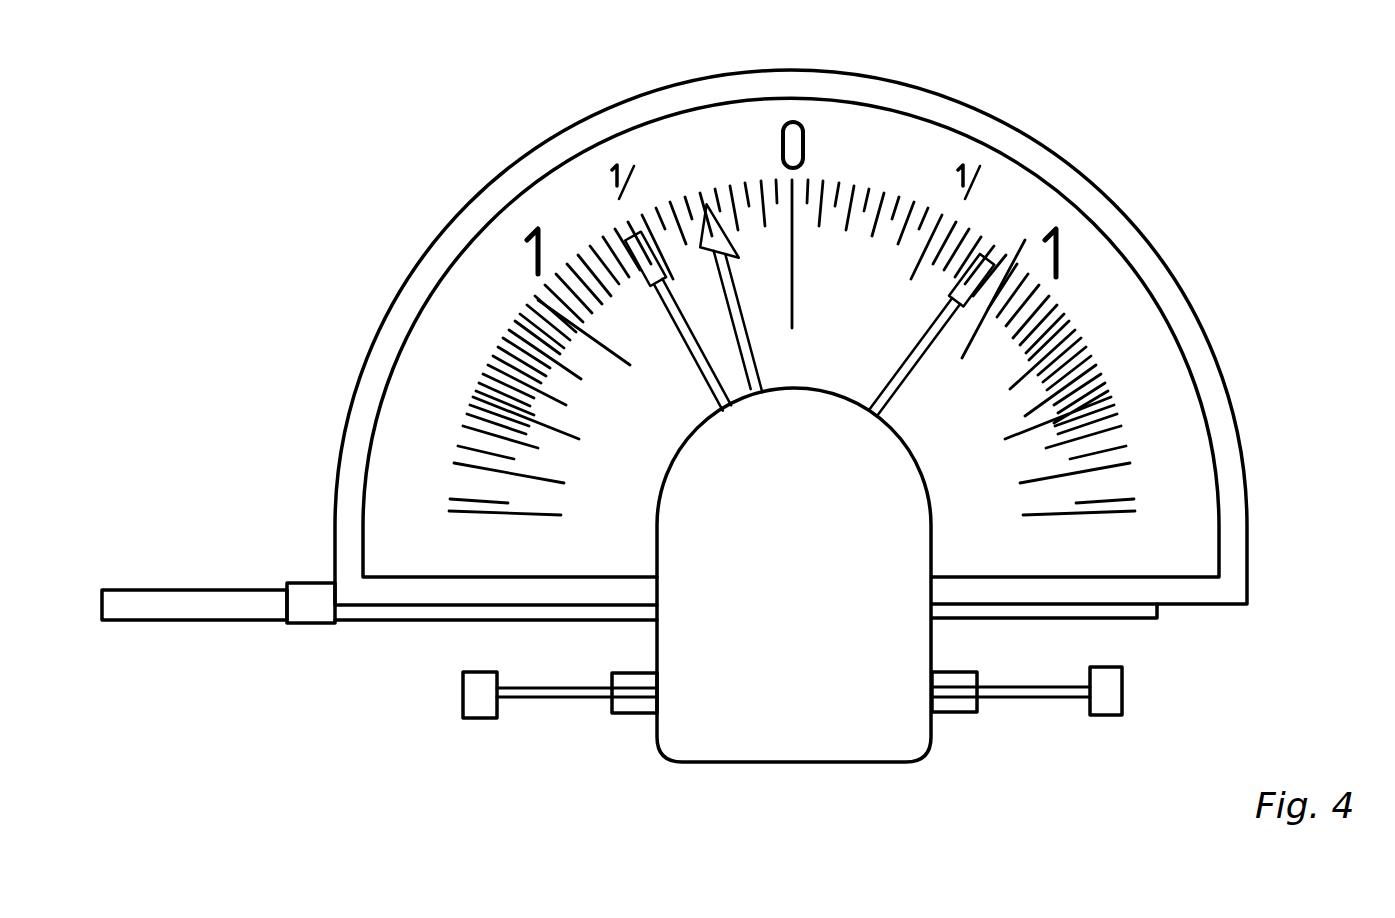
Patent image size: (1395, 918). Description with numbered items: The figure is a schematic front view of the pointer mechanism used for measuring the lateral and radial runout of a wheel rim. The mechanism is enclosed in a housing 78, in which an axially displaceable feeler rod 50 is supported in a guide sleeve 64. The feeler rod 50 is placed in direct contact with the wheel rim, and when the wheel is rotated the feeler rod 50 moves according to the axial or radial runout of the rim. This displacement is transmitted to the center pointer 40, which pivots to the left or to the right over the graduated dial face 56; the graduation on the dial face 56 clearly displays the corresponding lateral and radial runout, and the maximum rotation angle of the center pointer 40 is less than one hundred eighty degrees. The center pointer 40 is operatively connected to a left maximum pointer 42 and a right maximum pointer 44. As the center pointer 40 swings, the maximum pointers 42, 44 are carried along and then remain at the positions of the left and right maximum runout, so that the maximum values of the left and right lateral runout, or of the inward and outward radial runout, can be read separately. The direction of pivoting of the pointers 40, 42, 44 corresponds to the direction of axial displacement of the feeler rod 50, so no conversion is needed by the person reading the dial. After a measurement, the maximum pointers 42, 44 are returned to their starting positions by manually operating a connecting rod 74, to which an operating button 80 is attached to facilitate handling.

The center pointer 40 is at (712, 240).
The left maximum pointer 42 is at (640, 270).
The right maximum pointer 44 is at (975, 277).
The dial face 56 is at (1098, 290).
The housing 78 is at (1227, 435).
The feeler rod 50 is at (220, 605).
The guide sleeve 64 is at (323, 603).
The operating button 80 is at (485, 688).
The connecting rod 74 is at (545, 695).